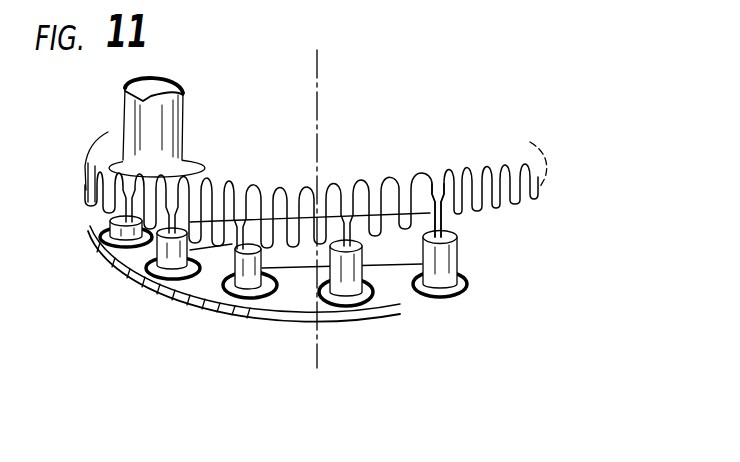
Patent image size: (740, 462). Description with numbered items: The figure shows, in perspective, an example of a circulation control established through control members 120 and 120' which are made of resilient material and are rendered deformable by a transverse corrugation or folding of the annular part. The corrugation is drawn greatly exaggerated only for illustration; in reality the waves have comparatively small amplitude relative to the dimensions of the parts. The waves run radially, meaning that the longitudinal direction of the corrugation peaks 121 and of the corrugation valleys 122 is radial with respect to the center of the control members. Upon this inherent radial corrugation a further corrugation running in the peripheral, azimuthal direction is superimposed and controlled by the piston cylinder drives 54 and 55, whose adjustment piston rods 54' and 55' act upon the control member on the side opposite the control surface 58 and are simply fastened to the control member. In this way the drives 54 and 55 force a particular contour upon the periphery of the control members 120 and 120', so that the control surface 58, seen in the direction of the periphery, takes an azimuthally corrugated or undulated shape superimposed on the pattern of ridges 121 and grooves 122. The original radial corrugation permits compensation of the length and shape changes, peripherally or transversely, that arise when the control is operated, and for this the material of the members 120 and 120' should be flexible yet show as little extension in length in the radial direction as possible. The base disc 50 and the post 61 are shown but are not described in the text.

The base disc 50 is at (377, 303).
The piston cylinder drive 54 is at (501, 268).
The piston cylinder drive 55 is at (440, 264).
The adjustment piston rod 54' is at (522, 216).
The adjustment piston rod 55' is at (438, 210).
The control surface 58 is at (371, 166).
The cylindrical post 61 is at (167, 132).
The control member 120 is at (550, 148).
The control member 120' is at (495, 178).
The corrugation peak 121 is at (371, 166).
The corrugation valley 122 is at (212, 257).